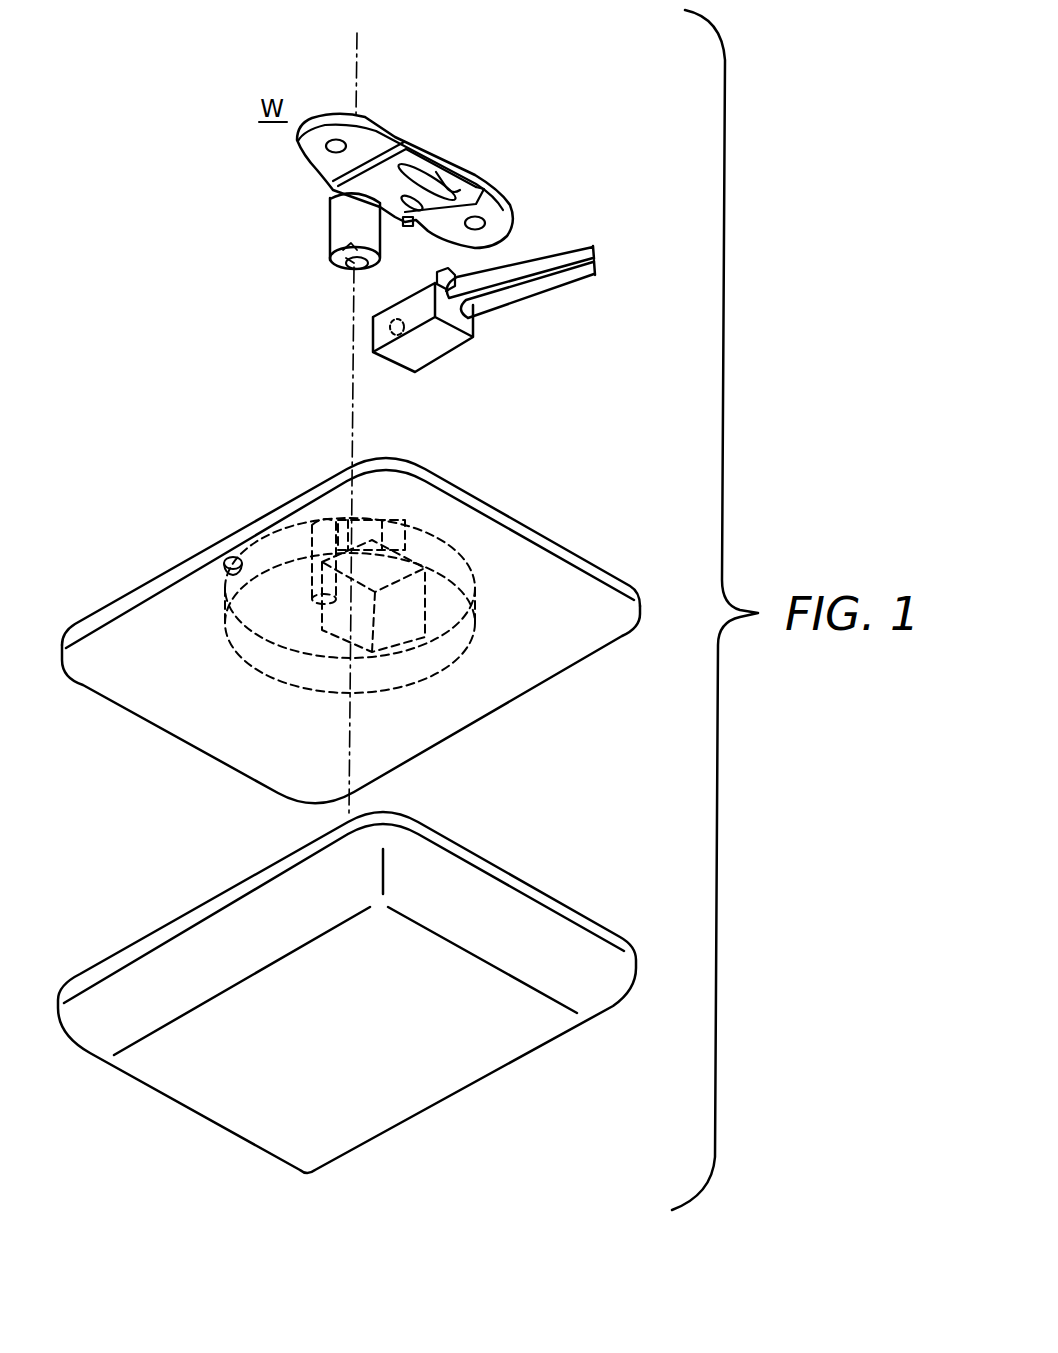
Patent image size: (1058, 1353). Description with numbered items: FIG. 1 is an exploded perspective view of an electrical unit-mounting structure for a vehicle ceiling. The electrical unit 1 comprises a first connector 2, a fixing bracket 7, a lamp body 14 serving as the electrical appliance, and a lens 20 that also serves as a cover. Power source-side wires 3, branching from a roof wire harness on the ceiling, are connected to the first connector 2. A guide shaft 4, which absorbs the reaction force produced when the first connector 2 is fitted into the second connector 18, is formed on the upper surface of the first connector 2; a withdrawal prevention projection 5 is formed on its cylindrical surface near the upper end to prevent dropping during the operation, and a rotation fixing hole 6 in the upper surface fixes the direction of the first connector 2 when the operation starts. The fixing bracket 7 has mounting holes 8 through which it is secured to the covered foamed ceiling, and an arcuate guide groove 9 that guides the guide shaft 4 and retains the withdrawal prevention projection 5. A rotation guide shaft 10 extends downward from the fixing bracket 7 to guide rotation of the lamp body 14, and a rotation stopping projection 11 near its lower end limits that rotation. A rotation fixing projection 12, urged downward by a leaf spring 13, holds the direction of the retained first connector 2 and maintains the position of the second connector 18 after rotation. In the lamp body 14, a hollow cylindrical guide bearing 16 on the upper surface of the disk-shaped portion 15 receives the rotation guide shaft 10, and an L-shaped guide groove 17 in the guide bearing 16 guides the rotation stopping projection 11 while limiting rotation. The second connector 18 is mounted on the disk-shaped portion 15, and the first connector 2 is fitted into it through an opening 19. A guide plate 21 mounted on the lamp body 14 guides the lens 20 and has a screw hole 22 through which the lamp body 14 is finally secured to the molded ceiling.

The electrical unit 1 is at (556, 366).
The first connector 2 is at (468, 348).
The power source-side wires 3 is at (540, 294).
The guide shaft 4 is at (468, 272).
The withdrawal prevention projection 5 is at (425, 281).
The rotation fixing hole 6 is at (372, 319).
The fixing bracket 7 is at (423, 139).
The mounting holes 8 is at (336, 140).
The arcuate guide groove 9 is at (438, 172).
The rotation guide shaft 10 is at (330, 200).
The rotation stopping projection 11 is at (330, 250).
The rotation fixing projection 12 is at (505, 213).
The leaf spring 13 is at (474, 198).
The lamp body 14 is at (355, 605).
The disk-shaped portion 15 is at (424, 524).
The guide bearing 16 is at (350, 466).
The L-shaped guide groove 17 is at (302, 494).
The second connector 18 is at (500, 605).
The opening 19 is at (485, 540).
The lens 20 is at (505, 876).
The guide plate 21 is at (507, 703).
The screw hole 22 is at (239, 556).